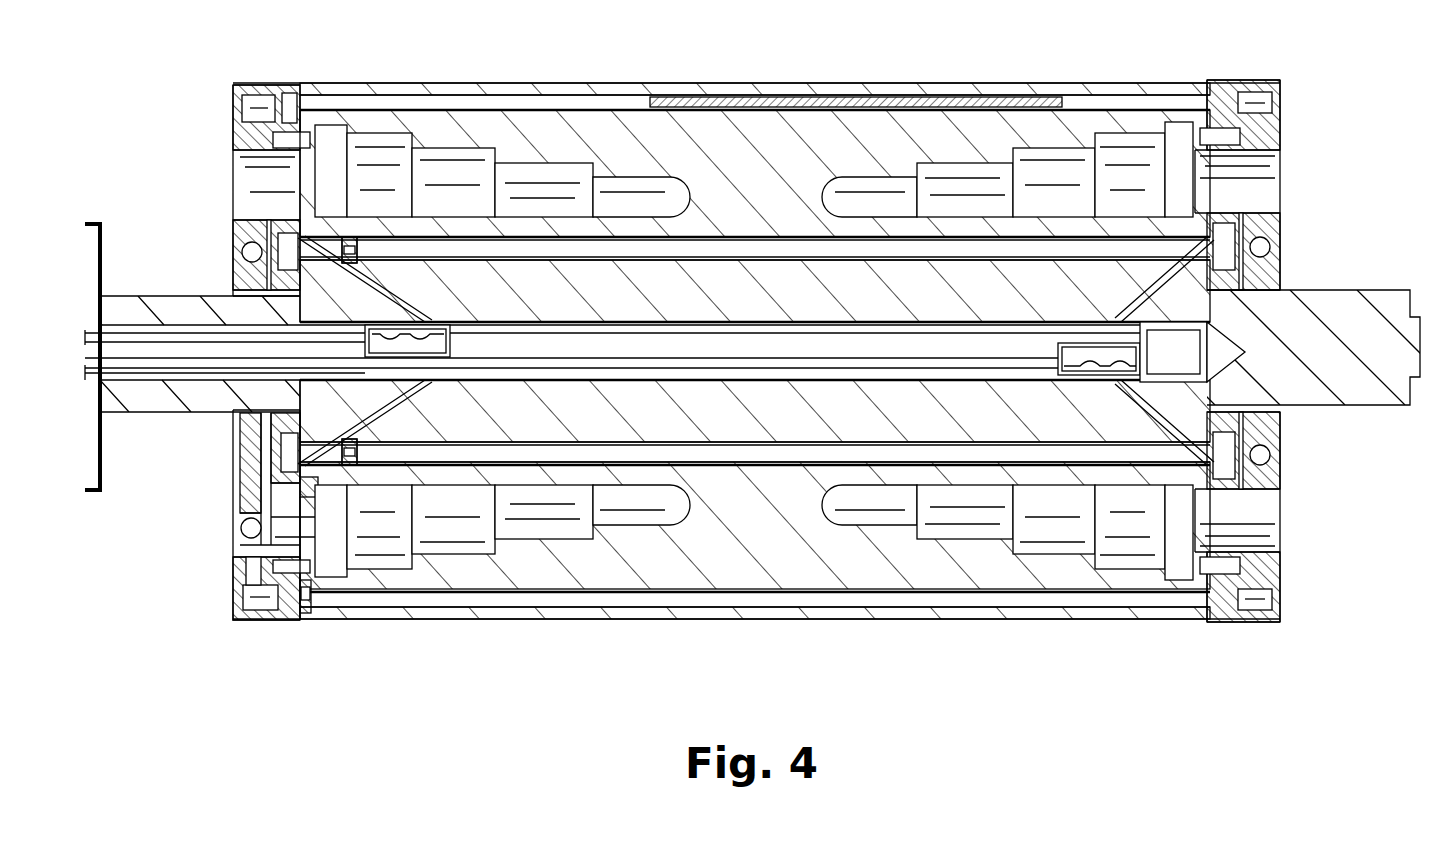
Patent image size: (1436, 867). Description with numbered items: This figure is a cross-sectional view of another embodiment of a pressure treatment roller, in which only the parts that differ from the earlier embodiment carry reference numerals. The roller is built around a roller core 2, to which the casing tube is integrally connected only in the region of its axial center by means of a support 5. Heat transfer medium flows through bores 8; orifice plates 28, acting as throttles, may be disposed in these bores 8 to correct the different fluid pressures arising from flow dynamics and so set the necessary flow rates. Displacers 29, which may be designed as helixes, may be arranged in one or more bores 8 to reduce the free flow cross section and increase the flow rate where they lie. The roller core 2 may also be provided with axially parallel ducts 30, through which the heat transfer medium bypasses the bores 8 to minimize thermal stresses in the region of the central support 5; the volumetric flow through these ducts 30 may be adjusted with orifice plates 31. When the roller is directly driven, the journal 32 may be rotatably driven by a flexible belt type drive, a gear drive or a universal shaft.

The roller core 2 is at (503, 290).
The support 5 is at (785, 540).
The bores 8 is at (1075, 100).
The orifice plates 28 is at (312, 600).
The displacers 29 is at (792, 100).
The axially parallel ducts 30 is at (617, 248).
The orifice plates 31 is at (373, 250).
The journal 32 is at (1325, 305).